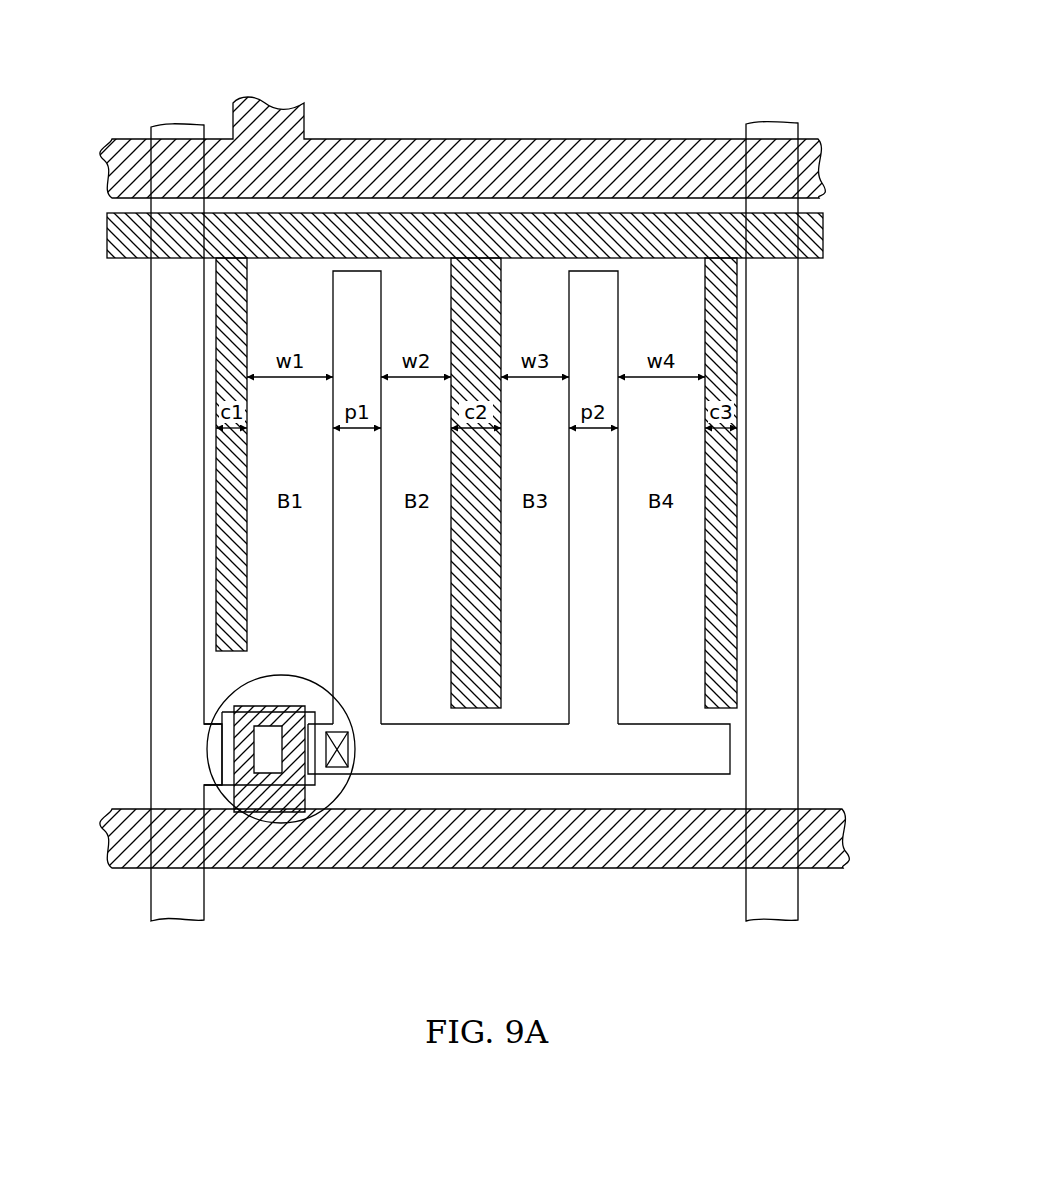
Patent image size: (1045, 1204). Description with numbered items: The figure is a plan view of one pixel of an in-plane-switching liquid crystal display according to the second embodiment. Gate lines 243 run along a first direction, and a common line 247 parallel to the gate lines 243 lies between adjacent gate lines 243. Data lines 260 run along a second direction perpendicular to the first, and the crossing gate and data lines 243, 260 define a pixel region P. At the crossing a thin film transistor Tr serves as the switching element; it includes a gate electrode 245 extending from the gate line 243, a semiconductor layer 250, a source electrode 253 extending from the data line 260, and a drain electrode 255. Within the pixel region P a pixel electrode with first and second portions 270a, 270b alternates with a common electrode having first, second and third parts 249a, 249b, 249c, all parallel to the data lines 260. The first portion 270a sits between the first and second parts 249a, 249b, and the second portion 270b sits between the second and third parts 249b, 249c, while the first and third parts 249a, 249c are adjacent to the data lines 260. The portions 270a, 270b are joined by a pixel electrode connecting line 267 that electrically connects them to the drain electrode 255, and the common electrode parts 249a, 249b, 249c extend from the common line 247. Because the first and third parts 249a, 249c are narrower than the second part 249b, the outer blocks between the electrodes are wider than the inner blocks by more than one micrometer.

The gate line 243 is at (642, 868).
The gate electrode 245 is at (252, 787).
The common line 247 is at (808, 242).
The first part of the common electrode 249a is at (218, 322).
The second part of the common electrode 249b is at (479, 700).
The third part of the common electrode 249c is at (723, 645).
The semiconductor layer 250 is at (312, 782).
The source electrode 253 is at (215, 752).
The drain electrode 255 is at (322, 732).
The data line 260 is at (165, 390).
The pixel electrode connecting line 267 is at (715, 751).
The first portion of the pixel electrode 270a is at (361, 282).
The second portion of the pixel electrode 270b is at (591, 285).
The pixel region P is at (648, 280).
The thin film transistor Tr is at (282, 823).